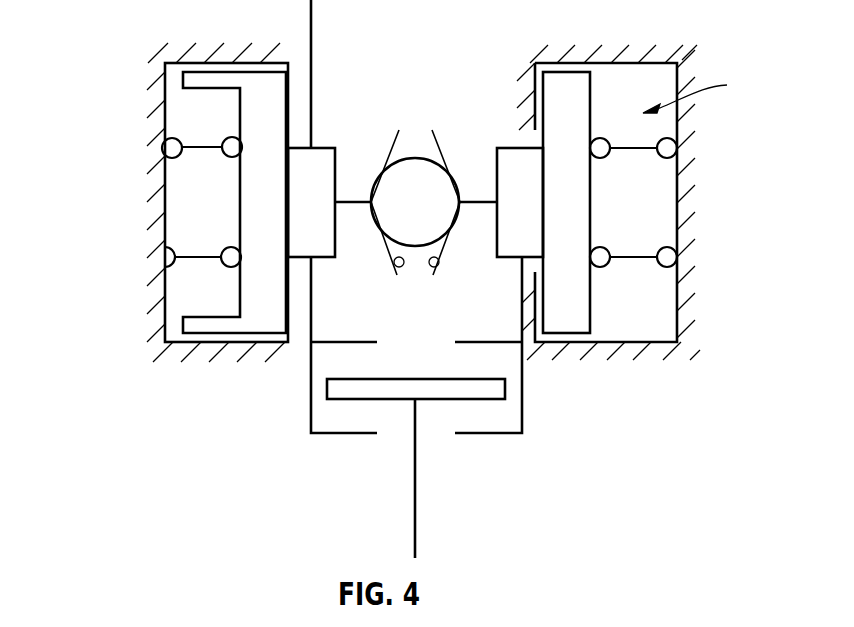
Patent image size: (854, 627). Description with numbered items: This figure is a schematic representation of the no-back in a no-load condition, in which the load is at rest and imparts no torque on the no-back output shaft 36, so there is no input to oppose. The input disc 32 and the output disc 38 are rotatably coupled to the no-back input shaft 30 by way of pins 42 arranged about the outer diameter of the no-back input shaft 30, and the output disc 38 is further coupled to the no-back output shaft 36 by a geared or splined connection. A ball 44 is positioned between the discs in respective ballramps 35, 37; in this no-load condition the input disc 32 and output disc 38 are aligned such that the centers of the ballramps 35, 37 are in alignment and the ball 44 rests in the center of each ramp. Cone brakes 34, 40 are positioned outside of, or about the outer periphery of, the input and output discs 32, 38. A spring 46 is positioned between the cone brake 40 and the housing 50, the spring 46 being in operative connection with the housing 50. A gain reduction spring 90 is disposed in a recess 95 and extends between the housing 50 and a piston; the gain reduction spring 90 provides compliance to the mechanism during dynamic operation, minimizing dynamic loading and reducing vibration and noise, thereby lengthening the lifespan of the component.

The no-back input shaft 30 is at (415, 480).
The input disc 32 is at (513, 165).
The cone brake 34 is at (563, 88).
The ballramp 35 is at (394, 264).
The no-back output shaft 36 is at (311, 83).
The ballramp 37 is at (439, 264).
The output disc 38 is at (303, 220).
The cone brake 40 is at (252, 125).
The pin 42 is at (327, 388).
The ball 44 is at (410, 178).
The spring 46 is at (170, 146).
The housing 50 is at (160, 220).
The gain reduction spring 90 is at (668, 258).
The recess 95 is at (700, 93).